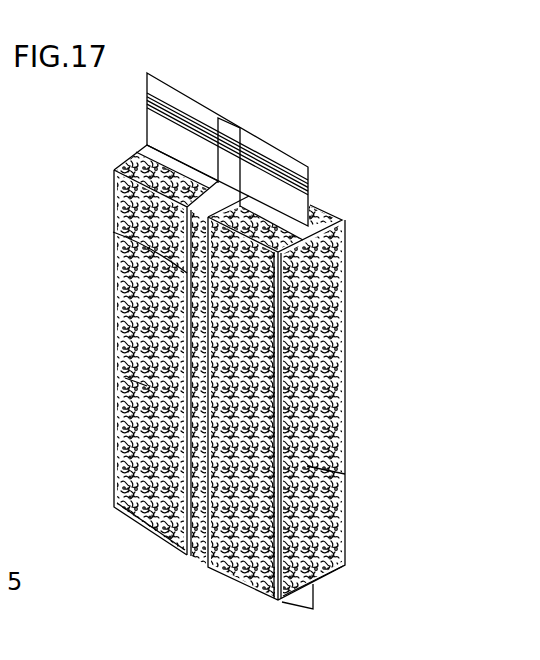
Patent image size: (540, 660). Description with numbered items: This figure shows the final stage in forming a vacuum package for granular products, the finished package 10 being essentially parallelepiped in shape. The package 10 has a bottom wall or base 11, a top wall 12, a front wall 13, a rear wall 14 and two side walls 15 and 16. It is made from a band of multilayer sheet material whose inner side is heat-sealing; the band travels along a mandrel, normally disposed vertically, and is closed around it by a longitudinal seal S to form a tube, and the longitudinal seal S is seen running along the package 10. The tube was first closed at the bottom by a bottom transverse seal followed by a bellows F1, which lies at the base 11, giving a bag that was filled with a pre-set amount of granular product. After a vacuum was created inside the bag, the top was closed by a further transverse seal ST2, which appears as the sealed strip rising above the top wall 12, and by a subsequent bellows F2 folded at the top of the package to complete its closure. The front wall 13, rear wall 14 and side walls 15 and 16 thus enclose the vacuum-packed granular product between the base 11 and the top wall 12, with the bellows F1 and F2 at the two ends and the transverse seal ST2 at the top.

The package 10 is at (378, 297).
The bottom wall 11 is at (147, 533).
The top wall 12 is at (133, 158).
The front wall 13 is at (345, 392).
The rear wall 14 is at (125, 378).
The side wall 15 is at (345, 474).
The side wall 16 is at (113, 316).
The longitudinal seal S is at (113, 232).
The further transverse seal ST2 is at (253, 160).
The bellows F1 is at (326, 584).
The bellows F2 is at (342, 237).